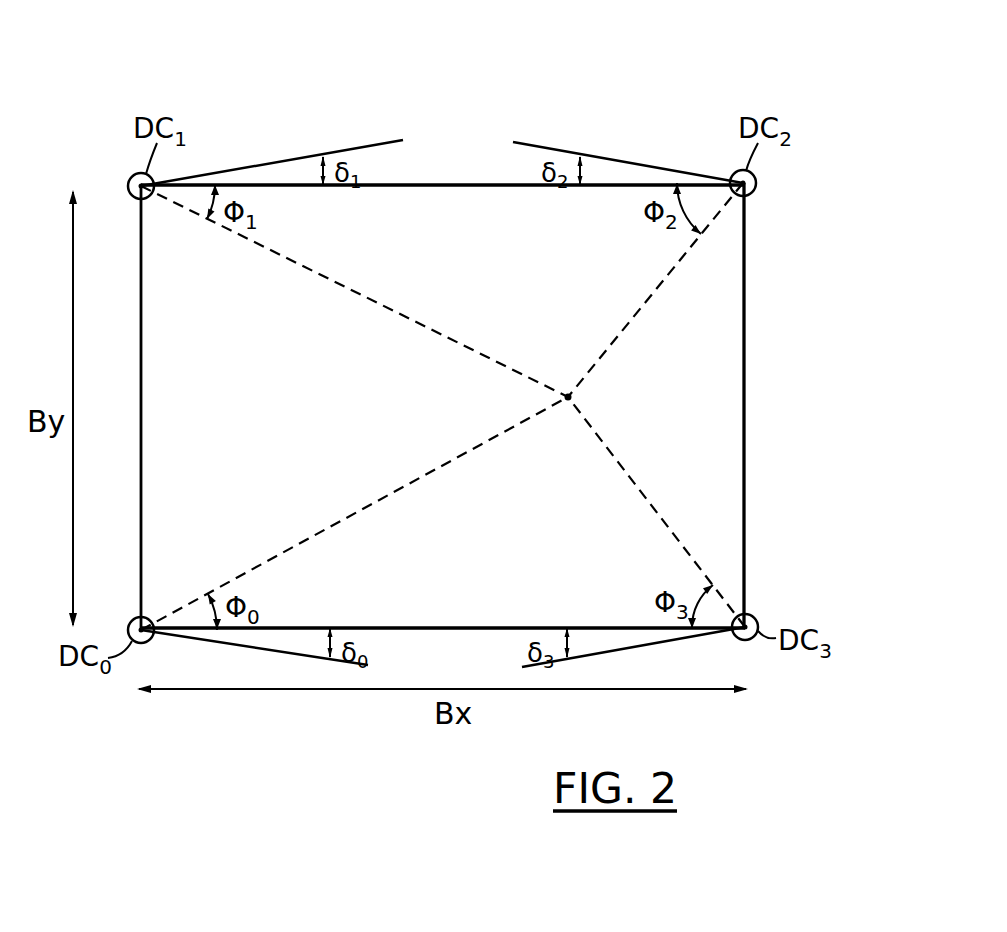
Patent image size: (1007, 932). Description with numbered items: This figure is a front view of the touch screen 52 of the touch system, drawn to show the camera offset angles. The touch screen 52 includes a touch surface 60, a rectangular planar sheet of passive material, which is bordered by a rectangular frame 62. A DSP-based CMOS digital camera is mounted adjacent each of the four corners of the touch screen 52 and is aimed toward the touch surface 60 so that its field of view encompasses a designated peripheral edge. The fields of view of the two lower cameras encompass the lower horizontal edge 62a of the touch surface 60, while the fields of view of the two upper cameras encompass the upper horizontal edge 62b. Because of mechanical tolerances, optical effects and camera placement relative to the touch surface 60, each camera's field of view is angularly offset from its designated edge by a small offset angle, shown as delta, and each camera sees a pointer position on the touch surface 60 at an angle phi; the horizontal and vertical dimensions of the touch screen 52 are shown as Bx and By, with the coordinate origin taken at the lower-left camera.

The touch screen 52 is at (646, 104).
The touch surface 60 is at (727, 474).
The rectangular frame 62 is at (752, 344).
The lower horizontal edge 62a is at (450, 627).
The upper horizontal edge 62b is at (451, 175).